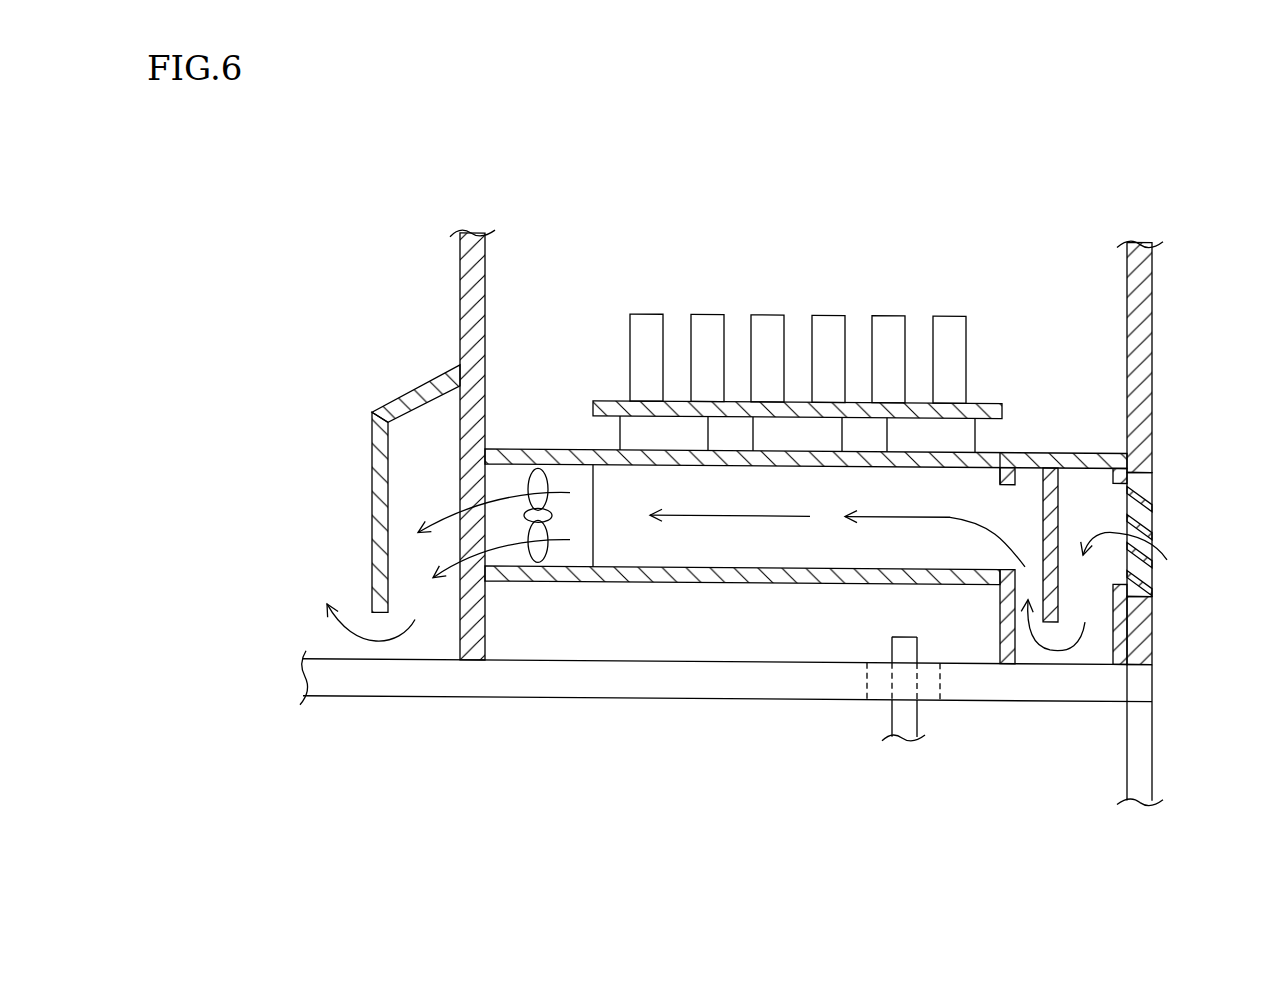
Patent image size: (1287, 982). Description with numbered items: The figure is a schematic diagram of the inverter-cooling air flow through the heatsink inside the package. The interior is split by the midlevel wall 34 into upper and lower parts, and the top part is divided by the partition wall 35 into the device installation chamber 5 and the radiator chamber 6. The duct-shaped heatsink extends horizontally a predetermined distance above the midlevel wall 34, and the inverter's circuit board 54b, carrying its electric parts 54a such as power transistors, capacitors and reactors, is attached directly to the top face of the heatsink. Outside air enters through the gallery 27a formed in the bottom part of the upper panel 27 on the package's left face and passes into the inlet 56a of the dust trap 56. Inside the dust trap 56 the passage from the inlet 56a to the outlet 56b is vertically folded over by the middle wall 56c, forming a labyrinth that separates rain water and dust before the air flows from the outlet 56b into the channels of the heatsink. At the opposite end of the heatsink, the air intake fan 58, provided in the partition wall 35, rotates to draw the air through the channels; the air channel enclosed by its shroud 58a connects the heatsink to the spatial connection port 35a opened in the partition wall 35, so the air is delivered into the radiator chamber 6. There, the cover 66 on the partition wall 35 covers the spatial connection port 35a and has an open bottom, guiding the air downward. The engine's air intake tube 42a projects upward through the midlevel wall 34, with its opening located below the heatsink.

The device installation chamber 5 is at (540, 227).
The radiator chamber 6 is at (303, 288).
The upper panel 27 is at (1153, 285).
The gallery 27a is at (1143, 513).
The midlevel wall 34 is at (707, 701).
The partition wall 35 is at (458, 282).
The spatial connection port 35a is at (459, 480).
The air intake tube 42a is at (917, 647).
The electric parts 54a is at (708, 431).
The circuit board 54b is at (918, 279).
The dust trap 56 is at (1073, 448).
The inlet 56a is at (1118, 479).
The outlet 56b is at (1000, 490).
The middle wall 56c is at (1060, 574).
The air intake fan 58 is at (539, 475).
The shroud 58a is at (513, 449).
The cover 66 is at (371, 456).